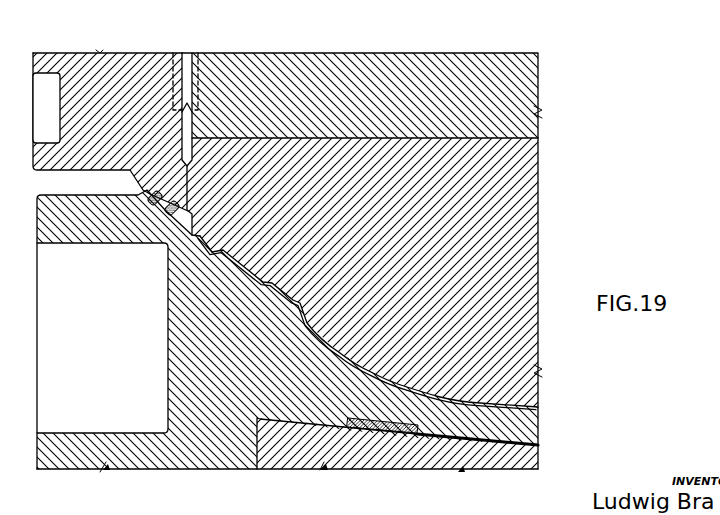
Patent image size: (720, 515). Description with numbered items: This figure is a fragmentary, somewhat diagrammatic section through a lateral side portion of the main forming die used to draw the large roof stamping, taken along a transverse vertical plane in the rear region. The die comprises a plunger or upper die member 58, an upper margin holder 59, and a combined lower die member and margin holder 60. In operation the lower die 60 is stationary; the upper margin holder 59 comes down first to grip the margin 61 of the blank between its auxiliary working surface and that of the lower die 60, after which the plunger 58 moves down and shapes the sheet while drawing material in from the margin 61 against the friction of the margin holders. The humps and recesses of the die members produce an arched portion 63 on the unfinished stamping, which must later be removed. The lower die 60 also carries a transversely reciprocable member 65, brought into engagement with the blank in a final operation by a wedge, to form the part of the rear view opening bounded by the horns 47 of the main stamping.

The horns 47 is at (210, 258).
The plunger 58 is at (528, 126).
The upper margin holder 59 is at (124, 58).
The combined lower die member and margin holder 60 is at (180, 392).
The margin of the blank 61 is at (160, 205).
The arched portion 63 is at (512, 400).
The transversely reciprocable member 65 is at (317, 460).